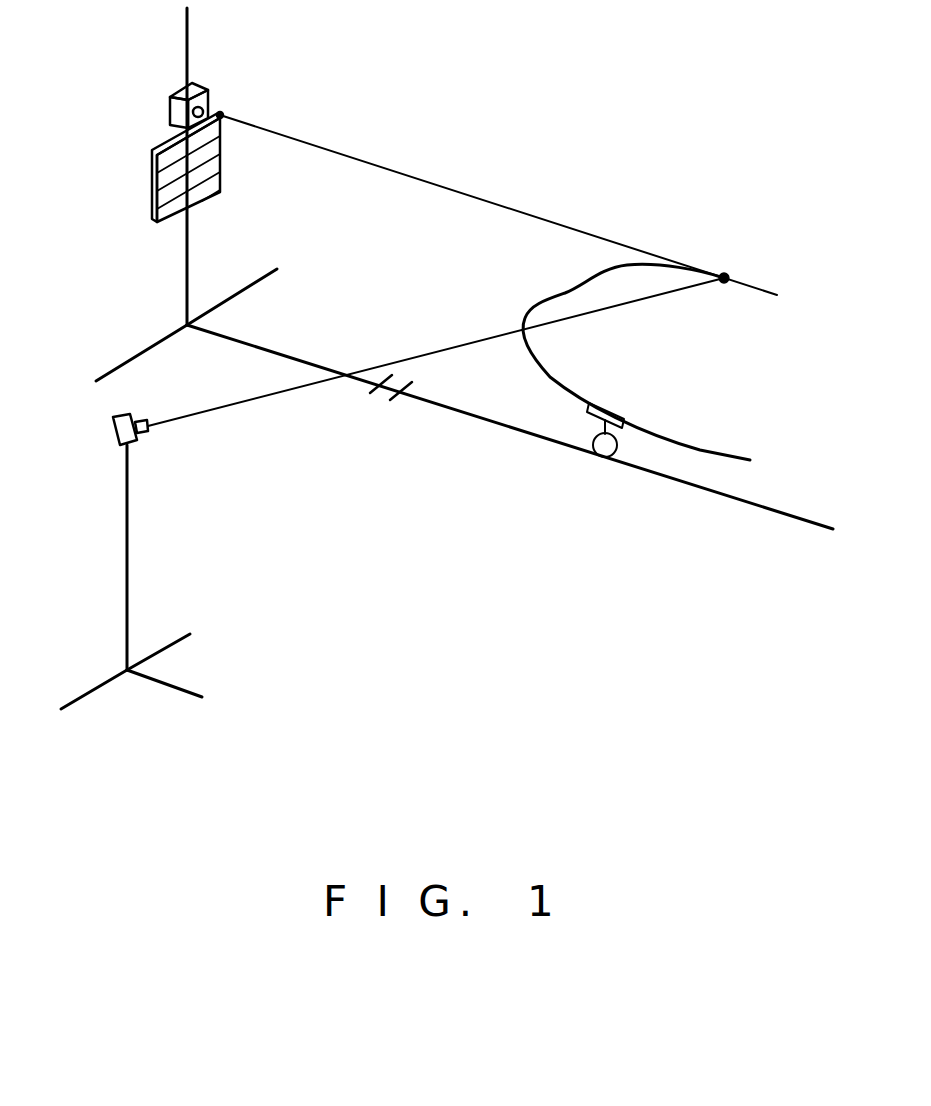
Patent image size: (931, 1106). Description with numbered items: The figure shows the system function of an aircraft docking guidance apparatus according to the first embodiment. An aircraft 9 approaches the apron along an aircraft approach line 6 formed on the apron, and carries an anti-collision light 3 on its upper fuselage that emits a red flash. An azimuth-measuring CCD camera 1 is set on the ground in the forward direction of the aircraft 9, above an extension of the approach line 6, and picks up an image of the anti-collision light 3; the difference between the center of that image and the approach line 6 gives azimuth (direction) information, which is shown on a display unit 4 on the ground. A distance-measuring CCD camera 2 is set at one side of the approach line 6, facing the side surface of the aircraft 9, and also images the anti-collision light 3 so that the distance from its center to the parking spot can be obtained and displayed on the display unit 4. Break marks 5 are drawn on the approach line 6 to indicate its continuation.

The CCD camera 1 is at (208, 88).
The CCD camera 2 is at (113, 432).
The anti-collision light 3 is at (730, 275).
The display unit 4 is at (152, 170).
The break marks on base line 5 is at (385, 394).
The aircraft approach line 6 is at (722, 492).
The aircraft 9 is at (578, 290).